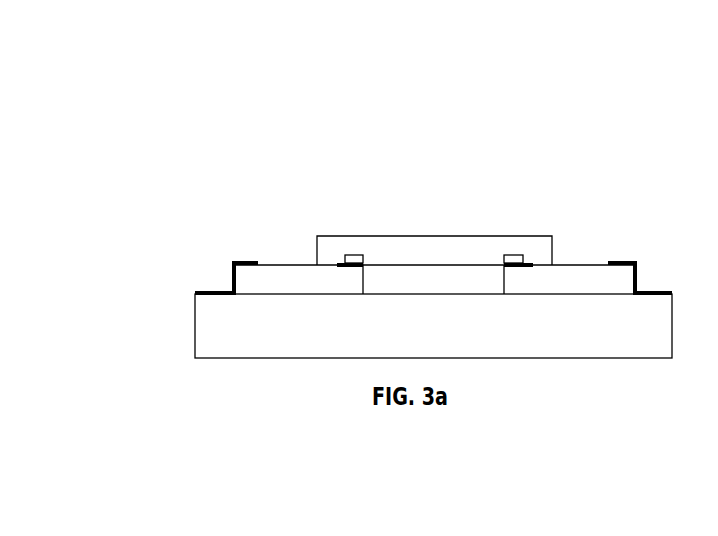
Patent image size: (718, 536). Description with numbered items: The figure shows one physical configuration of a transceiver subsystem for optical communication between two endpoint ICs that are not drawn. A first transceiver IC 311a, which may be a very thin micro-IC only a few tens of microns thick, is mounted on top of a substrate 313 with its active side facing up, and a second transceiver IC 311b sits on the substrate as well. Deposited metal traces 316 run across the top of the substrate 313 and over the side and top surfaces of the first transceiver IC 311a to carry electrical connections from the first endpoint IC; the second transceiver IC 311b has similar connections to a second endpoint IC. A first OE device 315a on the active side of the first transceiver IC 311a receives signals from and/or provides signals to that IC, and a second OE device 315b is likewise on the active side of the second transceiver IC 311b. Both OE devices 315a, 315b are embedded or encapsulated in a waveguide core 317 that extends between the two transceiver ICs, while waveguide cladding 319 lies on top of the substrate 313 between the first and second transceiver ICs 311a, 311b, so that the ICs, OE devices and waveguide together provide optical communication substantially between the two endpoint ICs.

The substrate 313 is at (193, 323).
The first transceiver IC 311a is at (288, 265).
The second transceiver IC 311b is at (578, 264).
The waveguide cladding 319 is at (442, 264).
The waveguide core 317 is at (342, 236).
The first OE device 315a is at (353, 256).
The second OE device 315b is at (517, 254).
The deposited metal traces 316 is at (213, 290).